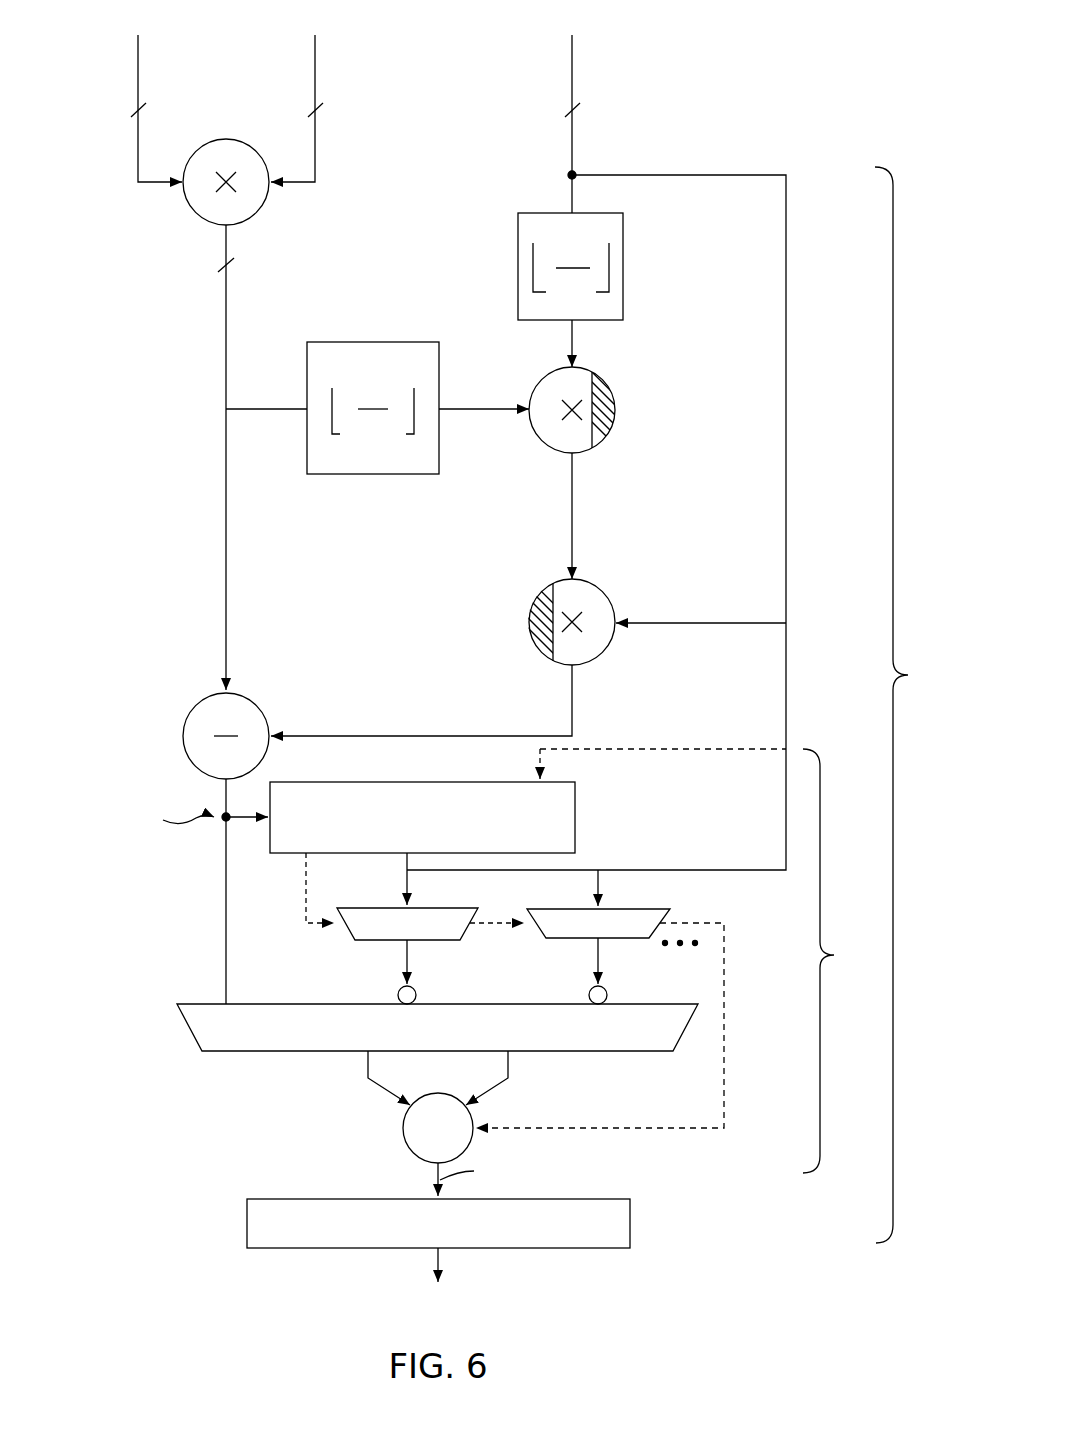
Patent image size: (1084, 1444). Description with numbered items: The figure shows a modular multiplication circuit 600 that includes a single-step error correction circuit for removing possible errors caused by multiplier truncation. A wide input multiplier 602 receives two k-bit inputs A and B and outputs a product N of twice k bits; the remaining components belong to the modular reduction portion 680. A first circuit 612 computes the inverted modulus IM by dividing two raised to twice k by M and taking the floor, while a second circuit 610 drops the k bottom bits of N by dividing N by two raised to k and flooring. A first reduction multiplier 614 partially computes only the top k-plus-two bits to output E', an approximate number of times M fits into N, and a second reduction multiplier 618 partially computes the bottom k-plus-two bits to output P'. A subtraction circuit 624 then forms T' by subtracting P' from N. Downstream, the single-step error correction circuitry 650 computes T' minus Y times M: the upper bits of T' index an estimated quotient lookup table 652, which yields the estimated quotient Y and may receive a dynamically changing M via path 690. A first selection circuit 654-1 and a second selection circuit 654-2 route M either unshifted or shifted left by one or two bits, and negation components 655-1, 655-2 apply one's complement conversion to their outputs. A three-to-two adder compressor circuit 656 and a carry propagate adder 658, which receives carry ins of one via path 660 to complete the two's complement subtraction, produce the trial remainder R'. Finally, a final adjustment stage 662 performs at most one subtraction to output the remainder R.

The modular multiplication circuit 600 is at (818, 48).
The wide input multiplier 602 is at (226, 139).
The second circuit 610 is at (373, 342).
The first circuit 612 is at (623, 270).
The first reduction multiplier 614 is at (614, 400).
The second reduction multiplier 618 is at (590, 582).
The subtraction circuit 624 is at (183, 738).
The single-step error correction circuit 650 is at (841, 961).
The estimated quotient lookup table 652 is at (575, 822).
The first selection circuit 654-1 is at (478, 912).
The second selection circuit 654-2 is at (668, 912).
The first negation component 655-1 is at (416, 996).
The second negation component 655-2 is at (607, 996).
The 3:2 adder compressor circuit 656 is at (188, 1032).
The carry propagate adder 658 is at (403, 1130).
The carry-in path 660 is at (724, 1082).
The final adjustment stage 662 is at (630, 1226).
The modular reduction circuit portion 680 is at (914, 705).
The modulus input path 690 is at (683, 749).